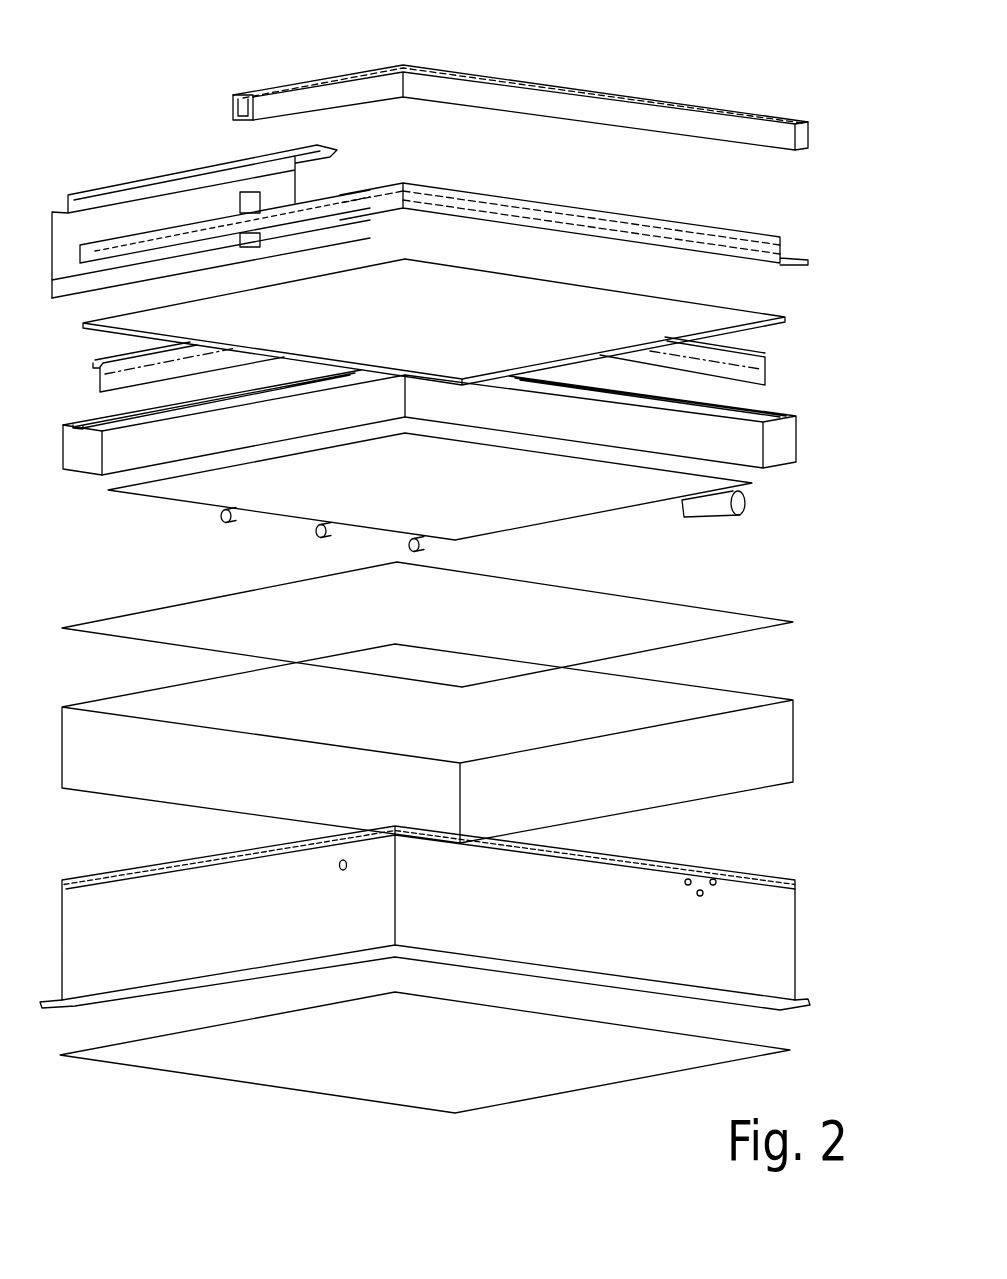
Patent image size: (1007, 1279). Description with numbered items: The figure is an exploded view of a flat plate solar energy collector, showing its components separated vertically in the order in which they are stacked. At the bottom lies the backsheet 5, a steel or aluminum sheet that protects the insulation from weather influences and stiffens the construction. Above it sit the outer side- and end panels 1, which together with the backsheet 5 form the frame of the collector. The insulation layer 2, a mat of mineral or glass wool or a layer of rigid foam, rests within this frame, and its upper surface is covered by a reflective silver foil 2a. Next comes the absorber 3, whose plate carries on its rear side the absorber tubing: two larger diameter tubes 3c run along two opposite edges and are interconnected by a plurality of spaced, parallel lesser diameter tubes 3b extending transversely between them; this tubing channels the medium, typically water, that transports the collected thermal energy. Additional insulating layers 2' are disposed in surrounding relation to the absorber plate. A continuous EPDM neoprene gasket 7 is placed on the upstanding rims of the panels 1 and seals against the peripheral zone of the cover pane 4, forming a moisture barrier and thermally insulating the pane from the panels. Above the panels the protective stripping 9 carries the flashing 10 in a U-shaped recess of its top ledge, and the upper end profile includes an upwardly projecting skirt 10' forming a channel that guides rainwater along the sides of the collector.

The outer side- and end panels 1 is at (737, 927).
The insulation layer 2 is at (454, 743).
The reflective silver foil 2a is at (698, 630).
The additional insulating layers 2' is at (459, 422).
The absorber 3 is at (558, 508).
The lesser diameter tubes 3b is at (410, 546).
The larger diameter tubes 3c is at (740, 508).
The cover pane 4 is at (730, 317).
The backsheet 5 is at (290, 1057).
The gasket 7 is at (758, 366).
The protective stripping 9 is at (745, 242).
The flashing 10 is at (211, 202).
The upwardly projecting skirt 10' is at (520, 76).